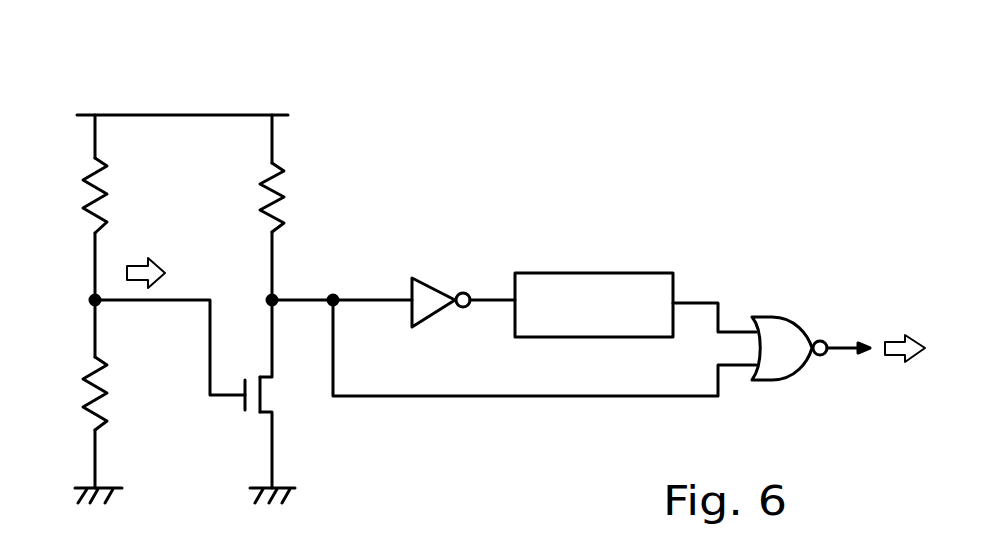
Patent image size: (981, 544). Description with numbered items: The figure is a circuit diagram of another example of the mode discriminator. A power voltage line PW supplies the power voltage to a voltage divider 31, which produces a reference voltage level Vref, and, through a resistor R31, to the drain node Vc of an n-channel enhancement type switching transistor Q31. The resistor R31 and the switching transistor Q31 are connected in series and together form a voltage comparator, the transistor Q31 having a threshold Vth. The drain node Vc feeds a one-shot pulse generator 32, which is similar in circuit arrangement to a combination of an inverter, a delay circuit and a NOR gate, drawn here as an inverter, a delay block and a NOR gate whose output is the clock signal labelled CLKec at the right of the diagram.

The voltage divider 31 is at (169, 276).
The one-shot pulse generator 32 is at (709, 202).
The resistor R31 is at (280, 172).
The n-channel enhancement type switching transistor Q31 is at (263, 385).
The power voltage line PW is at (200, 115).
The reference voltage level Vref is at (135, 260).
The drain node Vc is at (277, 298).
The clock output signal CLKec is at (893, 340).